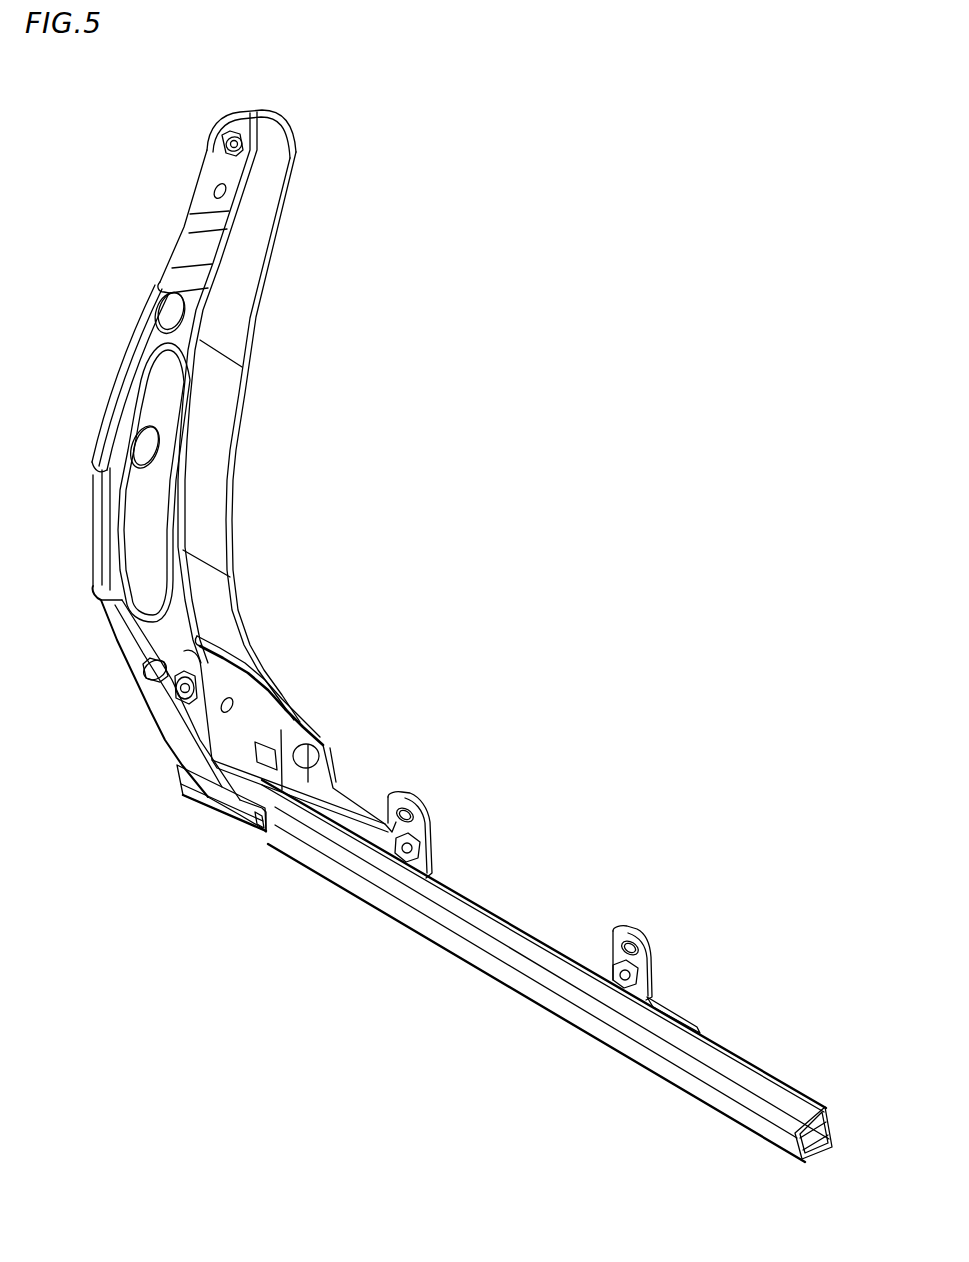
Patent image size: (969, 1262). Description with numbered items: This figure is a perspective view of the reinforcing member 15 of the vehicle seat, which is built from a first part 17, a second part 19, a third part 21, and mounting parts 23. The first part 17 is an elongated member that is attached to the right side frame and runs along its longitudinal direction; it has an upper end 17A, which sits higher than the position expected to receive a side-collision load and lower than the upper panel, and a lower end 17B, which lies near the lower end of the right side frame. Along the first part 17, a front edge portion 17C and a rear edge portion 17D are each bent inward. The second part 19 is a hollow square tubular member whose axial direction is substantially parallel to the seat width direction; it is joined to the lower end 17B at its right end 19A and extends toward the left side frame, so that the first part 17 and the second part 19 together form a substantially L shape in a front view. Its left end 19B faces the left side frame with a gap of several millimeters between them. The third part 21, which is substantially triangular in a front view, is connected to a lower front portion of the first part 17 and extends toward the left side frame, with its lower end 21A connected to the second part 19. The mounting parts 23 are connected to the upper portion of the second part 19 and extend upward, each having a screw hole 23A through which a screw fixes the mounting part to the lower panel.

The reinforcing member 15 is at (597, 167).
The first part 17 is at (190, 318).
The upper end 17A is at (267, 130).
The lower end 17B is at (207, 693).
The front edge portion 17C is at (133, 370).
The rear edge portion 17D is at (210, 452).
The second part 19 is at (492, 928).
The right end 19A is at (187, 787).
The left end 19B is at (800, 1107).
The third part 21 is at (167, 705).
The lower end 21A is at (245, 815).
The mounting part 23 is at (422, 800).
The screw hole 23A is at (390, 808).